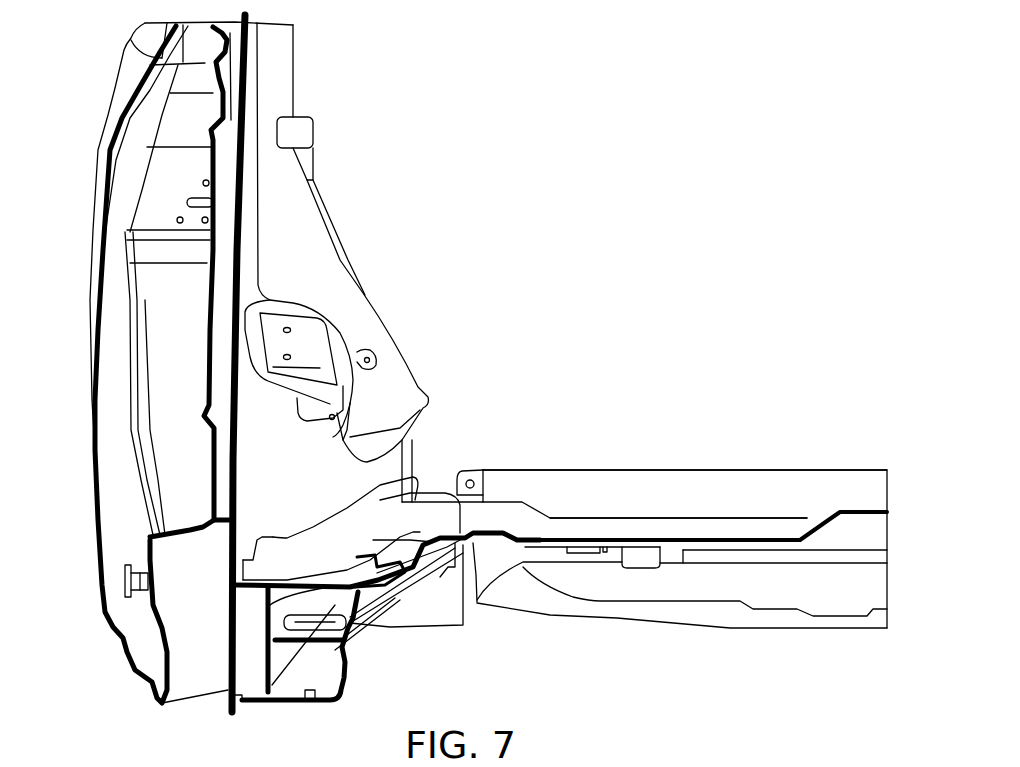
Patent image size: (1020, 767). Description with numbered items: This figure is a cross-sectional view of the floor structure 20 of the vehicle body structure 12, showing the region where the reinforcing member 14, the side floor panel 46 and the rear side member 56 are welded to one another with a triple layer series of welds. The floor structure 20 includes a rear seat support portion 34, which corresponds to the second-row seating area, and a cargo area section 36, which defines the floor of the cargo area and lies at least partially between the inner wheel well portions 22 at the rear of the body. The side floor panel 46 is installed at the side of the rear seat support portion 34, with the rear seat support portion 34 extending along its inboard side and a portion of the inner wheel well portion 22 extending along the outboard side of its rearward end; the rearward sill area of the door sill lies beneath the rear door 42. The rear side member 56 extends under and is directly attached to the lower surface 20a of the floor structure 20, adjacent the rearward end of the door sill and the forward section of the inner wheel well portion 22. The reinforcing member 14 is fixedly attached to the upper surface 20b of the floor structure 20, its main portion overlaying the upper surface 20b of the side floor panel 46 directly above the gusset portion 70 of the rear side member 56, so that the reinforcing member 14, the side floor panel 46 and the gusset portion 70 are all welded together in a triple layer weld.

The vehicle body structure 12 is at (656, 172).
The reinforcing member 14 is at (390, 565).
The floor structure 20 is at (656, 470).
The lower surface 20a is at (275, 588).
The upper surface 20b is at (258, 567).
The inner wheel well portion 22 is at (297, 244).
The rear seat support portion 34 is at (500, 533).
The cargo area section 36 is at (792, 493).
The rear door 42 is at (92, 408).
The side floor panel 46 is at (323, 570).
The rear side member 56 is at (363, 600).
The gusset portion 70 is at (385, 608).